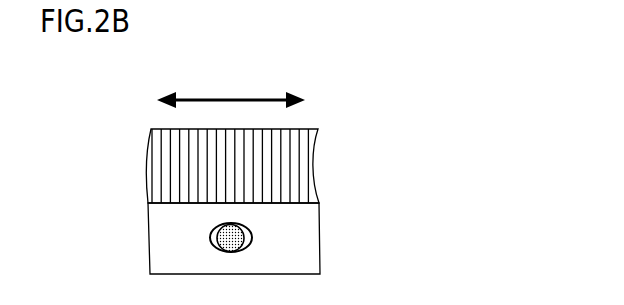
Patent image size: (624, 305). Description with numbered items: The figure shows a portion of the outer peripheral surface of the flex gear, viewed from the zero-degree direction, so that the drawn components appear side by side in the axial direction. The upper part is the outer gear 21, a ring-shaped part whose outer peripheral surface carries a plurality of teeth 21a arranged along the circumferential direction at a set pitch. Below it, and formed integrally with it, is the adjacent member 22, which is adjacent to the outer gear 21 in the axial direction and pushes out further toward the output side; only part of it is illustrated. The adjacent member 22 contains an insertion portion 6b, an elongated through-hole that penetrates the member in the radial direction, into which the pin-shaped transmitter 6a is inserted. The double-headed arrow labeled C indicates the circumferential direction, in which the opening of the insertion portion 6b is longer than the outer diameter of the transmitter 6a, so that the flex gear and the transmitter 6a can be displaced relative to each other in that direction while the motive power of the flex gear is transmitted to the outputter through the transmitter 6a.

The circumferential direction C is at (228, 96).
The outer gear 21 is at (320, 162).
The teeth 21a is at (177, 171).
The adjacent member 22 is at (303, 228).
The transmitter 6a is at (252, 237).
The insertion portion 6b is at (222, 249).